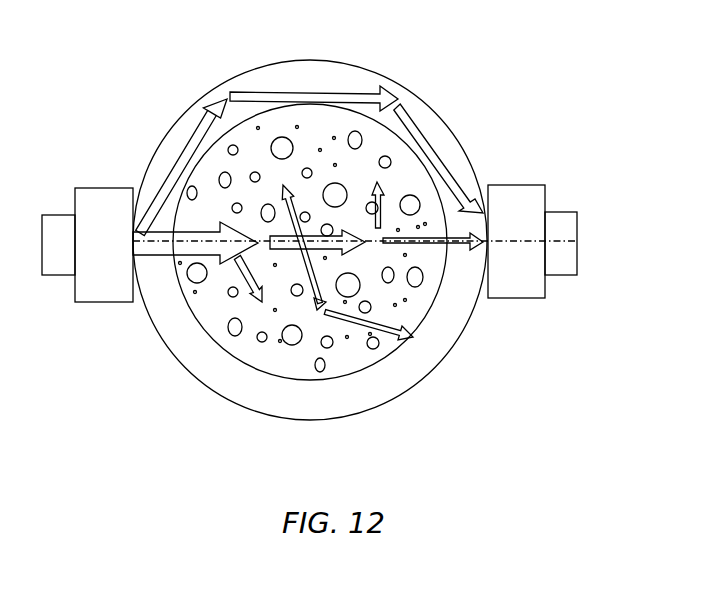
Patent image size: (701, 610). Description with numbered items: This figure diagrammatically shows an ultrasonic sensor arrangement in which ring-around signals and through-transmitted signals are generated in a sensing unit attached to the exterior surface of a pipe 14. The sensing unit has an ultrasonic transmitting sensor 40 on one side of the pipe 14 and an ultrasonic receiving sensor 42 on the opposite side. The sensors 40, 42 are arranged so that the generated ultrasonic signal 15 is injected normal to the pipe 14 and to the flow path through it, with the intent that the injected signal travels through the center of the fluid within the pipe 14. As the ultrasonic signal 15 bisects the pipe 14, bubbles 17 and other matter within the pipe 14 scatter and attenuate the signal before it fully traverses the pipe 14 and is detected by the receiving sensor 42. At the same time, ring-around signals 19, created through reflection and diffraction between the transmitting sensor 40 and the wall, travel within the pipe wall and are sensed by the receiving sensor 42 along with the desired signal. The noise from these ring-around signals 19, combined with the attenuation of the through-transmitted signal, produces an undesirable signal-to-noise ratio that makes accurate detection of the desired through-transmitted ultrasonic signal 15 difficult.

The pipe 14 is at (423, 378).
The ultrasonic signal 15 is at (163, 257).
The bubbles 17 is at (290, 343).
The ring-around signals 19 is at (308, 179).
The ultrasonic transmitting sensor 40 is at (60, 275).
The ultrasonic receiving sensor 42 is at (513, 298).